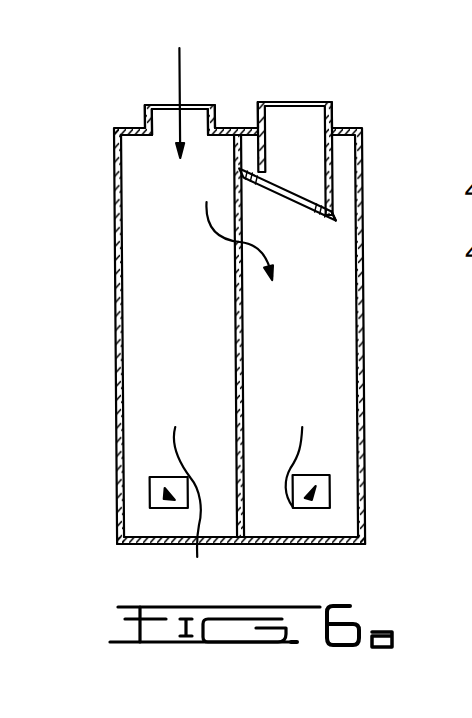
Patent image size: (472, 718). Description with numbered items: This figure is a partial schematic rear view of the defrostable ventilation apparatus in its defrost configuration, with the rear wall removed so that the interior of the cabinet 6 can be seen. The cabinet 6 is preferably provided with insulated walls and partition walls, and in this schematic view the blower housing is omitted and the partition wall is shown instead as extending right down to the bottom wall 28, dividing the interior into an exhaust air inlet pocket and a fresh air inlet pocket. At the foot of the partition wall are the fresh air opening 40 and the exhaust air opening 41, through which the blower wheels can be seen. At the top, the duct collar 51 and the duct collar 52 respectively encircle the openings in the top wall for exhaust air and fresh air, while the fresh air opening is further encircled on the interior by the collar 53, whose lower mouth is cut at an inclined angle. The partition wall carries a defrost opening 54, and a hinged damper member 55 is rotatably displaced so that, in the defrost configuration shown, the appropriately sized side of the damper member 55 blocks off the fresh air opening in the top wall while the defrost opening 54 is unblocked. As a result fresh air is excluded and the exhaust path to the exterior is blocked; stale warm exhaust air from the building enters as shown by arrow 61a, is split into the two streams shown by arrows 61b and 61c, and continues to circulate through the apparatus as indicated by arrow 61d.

The cabinet 6 is at (115, 382).
The bottom wall 28 is at (284, 543).
The fresh air opening 40 is at (322, 500).
The exhaust air opening 41 is at (145, 489).
The duct collar 51 is at (333, 106).
The duct collar 52 is at (145, 115).
The collar 53 is at (336, 180).
The defrost opening 54 is at (233, 260).
The damper member 55 is at (322, 218).
The input exhaust air arrow 61a is at (181, 78).
The exhaust air stream arrow 61b is at (193, 511).
The exhaust air stream arrow 61c is at (251, 244).
The exhaust air circulation arrow 61d is at (302, 448).